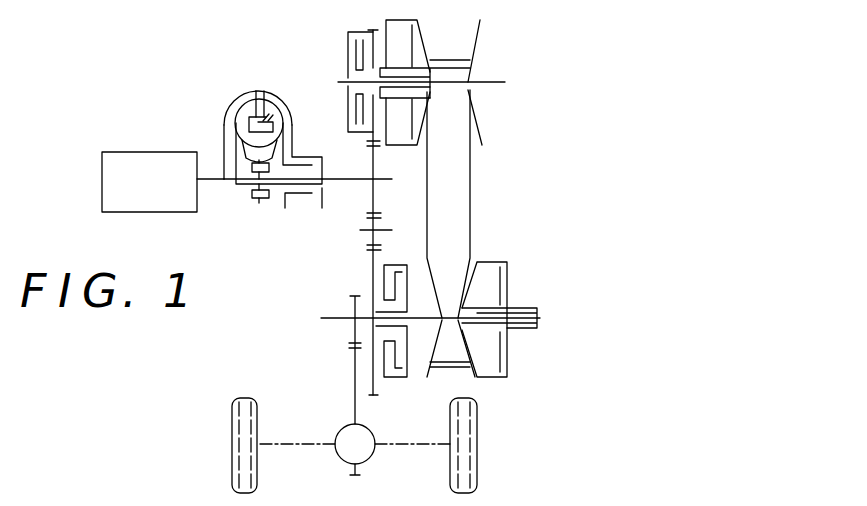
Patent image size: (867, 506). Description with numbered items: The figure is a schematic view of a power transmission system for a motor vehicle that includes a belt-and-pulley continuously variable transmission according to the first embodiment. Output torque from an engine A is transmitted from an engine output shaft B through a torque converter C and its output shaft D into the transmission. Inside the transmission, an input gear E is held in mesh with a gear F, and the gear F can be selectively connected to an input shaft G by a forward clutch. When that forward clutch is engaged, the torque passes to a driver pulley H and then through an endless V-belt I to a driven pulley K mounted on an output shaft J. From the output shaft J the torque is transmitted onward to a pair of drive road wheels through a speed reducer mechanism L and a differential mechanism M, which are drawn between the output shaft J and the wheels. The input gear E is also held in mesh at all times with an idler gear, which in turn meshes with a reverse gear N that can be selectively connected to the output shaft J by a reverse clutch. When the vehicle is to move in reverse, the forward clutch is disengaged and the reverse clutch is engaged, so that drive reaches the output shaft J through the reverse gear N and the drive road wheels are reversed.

The engine A is at (127, 144).
The engine output shaft B is at (208, 161).
The torque converter C is at (235, 80).
The output shaft of the torque converter D is at (344, 195).
The input gear E is at (361, 152).
The gear F is at (349, 21).
The input shaft G is at (332, 70).
The driver pulley H is at (502, 42).
The endless V-belt I is at (454, 175).
The output shaft J is at (330, 307).
The driven pulley K is at (520, 387).
The speed reducer mechanism L is at (329, 346).
The differential mechanism M is at (332, 417).
The reverse gear N is at (396, 389).